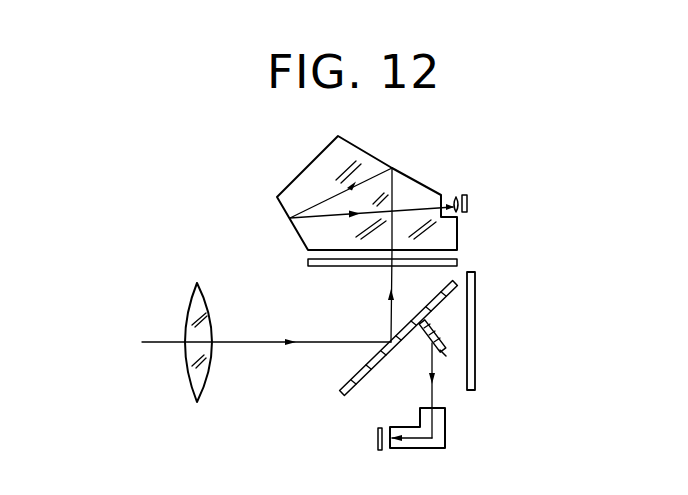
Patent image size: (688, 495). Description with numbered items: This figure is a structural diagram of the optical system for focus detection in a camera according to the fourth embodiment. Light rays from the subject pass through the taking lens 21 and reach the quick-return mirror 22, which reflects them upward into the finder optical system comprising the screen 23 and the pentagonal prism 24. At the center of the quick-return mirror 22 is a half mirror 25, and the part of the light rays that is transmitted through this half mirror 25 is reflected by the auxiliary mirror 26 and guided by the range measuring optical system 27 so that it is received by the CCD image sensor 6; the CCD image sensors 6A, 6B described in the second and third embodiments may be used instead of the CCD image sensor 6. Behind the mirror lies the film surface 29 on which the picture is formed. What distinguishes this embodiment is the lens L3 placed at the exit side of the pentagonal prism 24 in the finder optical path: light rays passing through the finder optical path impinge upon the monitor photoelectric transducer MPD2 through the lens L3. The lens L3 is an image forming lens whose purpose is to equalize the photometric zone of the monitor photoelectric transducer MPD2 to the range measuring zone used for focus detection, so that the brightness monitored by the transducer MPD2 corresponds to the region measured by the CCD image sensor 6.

The taking lens 21 is at (202, 377).
The quick-return mirror 22 is at (360, 368).
The screen 23 is at (313, 266).
The pentagonal prism 24 is at (295, 188).
The half mirror 25 is at (386, 346).
The auxiliary mirror 26 is at (444, 351).
The range measuring optical system 27 is at (443, 418).
The film surface 29 is at (475, 330).
The CCD image sensor 6 is at (329, 454).
The CCD image sensor 6A is at (380, 439).
The CCD image sensor 6B is at (377, 432).
The lens L3 is at (454, 200).
The monitor photoelectric transducer MPD2 is at (465, 195).